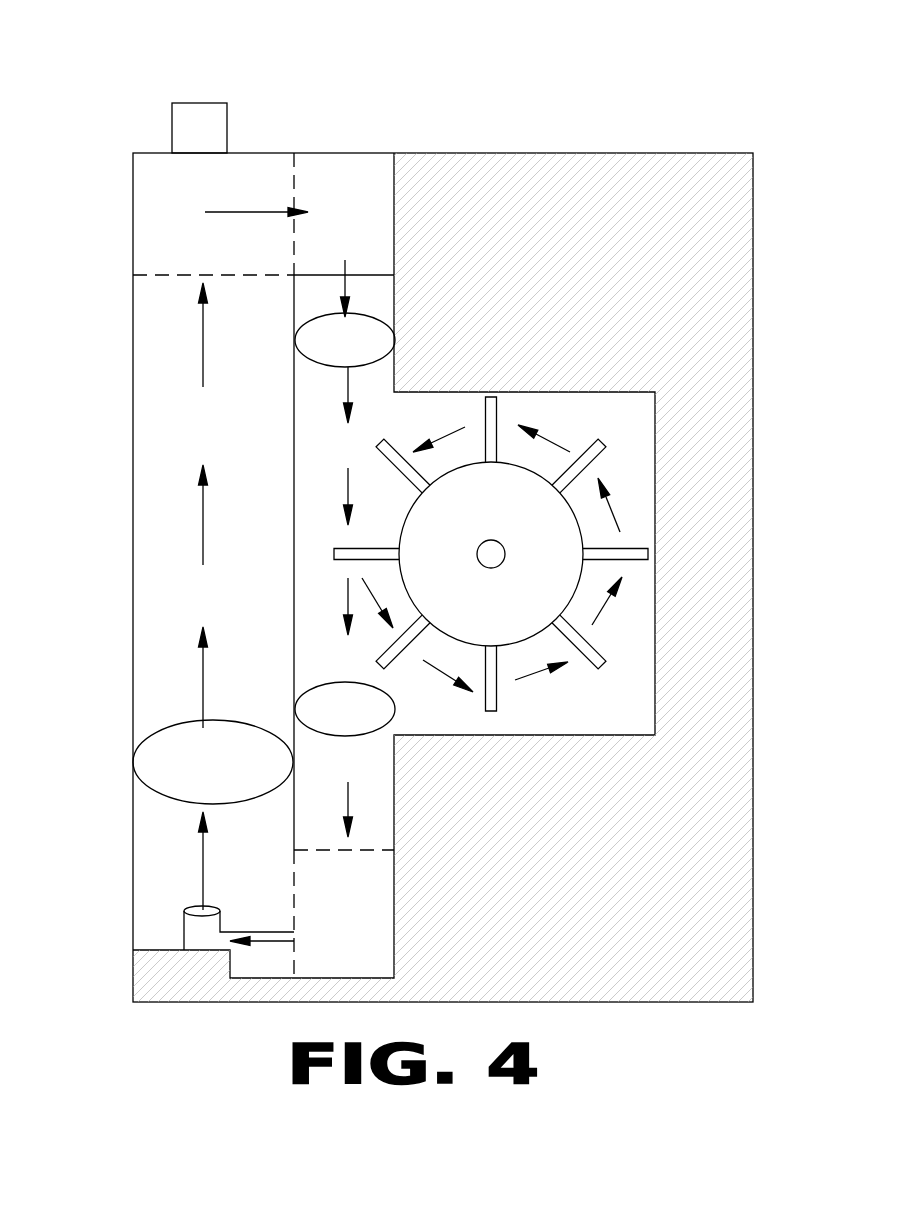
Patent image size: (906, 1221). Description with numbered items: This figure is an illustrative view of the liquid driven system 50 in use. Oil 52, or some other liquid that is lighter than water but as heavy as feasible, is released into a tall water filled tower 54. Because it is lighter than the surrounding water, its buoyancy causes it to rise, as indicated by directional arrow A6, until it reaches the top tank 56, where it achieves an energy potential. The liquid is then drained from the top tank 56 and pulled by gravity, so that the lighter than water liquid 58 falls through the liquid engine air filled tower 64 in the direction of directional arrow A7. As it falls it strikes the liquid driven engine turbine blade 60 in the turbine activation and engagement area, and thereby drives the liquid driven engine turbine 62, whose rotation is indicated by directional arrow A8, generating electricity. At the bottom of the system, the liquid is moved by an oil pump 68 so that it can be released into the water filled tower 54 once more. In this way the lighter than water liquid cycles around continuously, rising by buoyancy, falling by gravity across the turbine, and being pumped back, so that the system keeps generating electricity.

The liquid driven system 50 is at (676, 117).
The oil 52 is at (170, 780).
The water filled tower 54 is at (148, 517).
The top tank 56 is at (147, 170).
The lighter than water liquid 58 is at (382, 340).
The liquid driven engine turbine blade 60 is at (602, 447).
The liquid driven engine turbine 62 is at (535, 582).
The liquid engine air filled tower 64 is at (378, 290).
The oil pump 68 is at (217, 130).
The directional arrow A6 is at (203, 667).
The directional arrow A7 is at (350, 488).
The directional arrow A8 is at (607, 514).